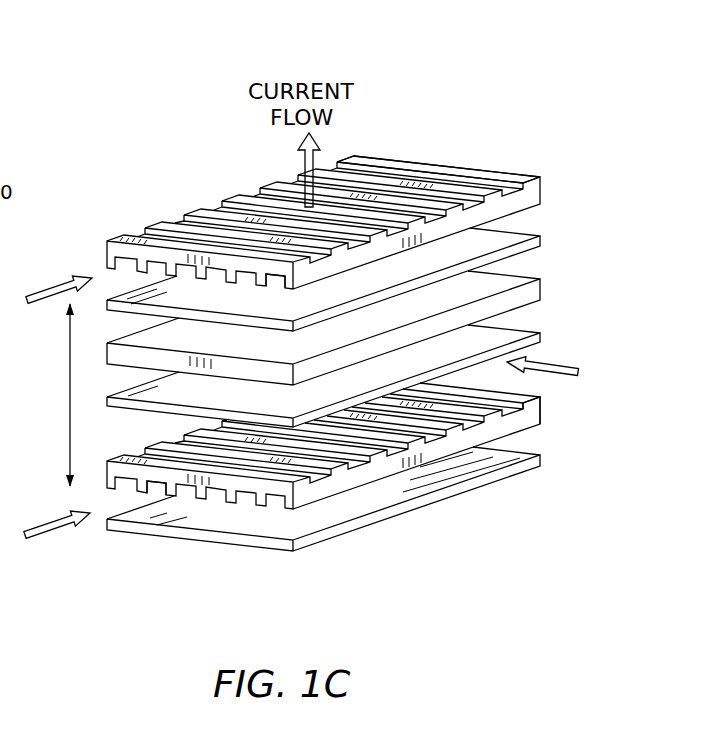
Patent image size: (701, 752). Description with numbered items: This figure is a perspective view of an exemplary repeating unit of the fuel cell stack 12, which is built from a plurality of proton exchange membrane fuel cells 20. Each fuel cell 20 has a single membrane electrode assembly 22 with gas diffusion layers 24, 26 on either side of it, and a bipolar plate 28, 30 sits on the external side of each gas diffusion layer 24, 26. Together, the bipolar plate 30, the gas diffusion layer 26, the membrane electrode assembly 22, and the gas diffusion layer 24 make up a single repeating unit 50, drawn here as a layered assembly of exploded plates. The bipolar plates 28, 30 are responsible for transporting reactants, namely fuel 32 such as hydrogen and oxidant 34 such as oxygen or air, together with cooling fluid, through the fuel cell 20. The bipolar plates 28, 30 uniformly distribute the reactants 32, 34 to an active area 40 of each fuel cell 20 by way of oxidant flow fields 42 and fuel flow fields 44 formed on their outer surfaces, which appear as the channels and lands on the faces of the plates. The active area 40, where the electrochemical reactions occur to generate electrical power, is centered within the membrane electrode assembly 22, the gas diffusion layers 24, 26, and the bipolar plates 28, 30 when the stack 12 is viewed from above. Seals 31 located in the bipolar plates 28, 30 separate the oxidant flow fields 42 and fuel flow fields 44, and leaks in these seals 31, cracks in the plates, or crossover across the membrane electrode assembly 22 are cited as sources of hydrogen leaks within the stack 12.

The fuel cell stack 12 is at (155, 166).
The fuel cell 20 is at (155, 166).
The membrane electrode assembly 22 is at (547, 286).
The gas diffusion layer 24 is at (547, 238).
The gas diffusion layer 26 is at (547, 334).
The bipolar plate 28 is at (547, 186).
The bipolar plate 30 is at (547, 405).
The seals 31 is at (547, 186).
The fuel 32 is at (553, 363).
The oxidant 34 is at (43, 305).
The active area 40 is at (61, 405).
The oxidant flow fields 42 is at (150, 497).
The fuel flow fields 44 is at (447, 160).
The repeating unit 50 is at (640, 208).